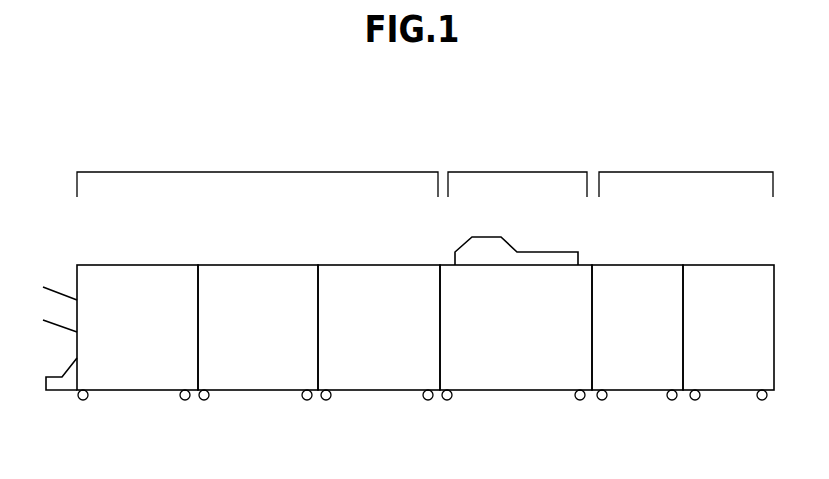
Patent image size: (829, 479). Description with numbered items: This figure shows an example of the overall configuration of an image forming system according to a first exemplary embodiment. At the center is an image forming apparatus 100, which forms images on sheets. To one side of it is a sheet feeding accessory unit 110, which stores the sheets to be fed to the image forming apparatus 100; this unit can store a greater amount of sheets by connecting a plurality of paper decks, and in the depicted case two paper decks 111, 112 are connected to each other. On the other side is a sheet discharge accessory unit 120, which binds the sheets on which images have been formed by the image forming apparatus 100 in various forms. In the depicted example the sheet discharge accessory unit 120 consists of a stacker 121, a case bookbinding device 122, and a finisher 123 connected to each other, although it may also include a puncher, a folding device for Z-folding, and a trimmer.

The image forming apparatus 100 is at (518, 172).
The sheet feeding accessory unit 110 is at (686, 172).
The paper deck 111 is at (641, 265).
The paper deck 112 is at (728, 265).
The sheet discharge accessory unit 120 is at (258, 172).
The stacker 121 is at (378, 265).
The case bookbinding device 122 is at (258, 265).
The finisher 123 is at (138, 265).